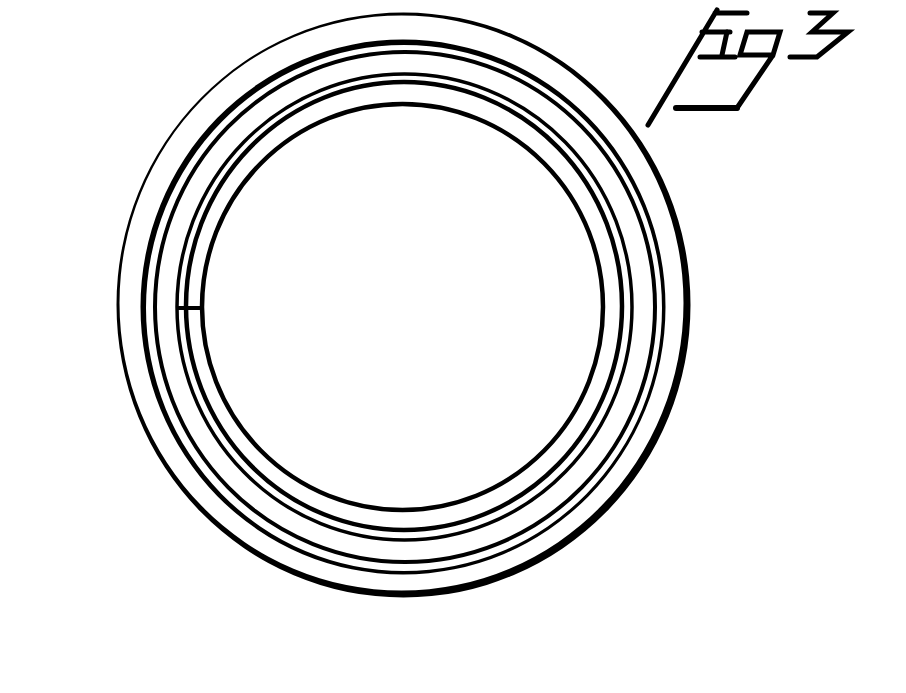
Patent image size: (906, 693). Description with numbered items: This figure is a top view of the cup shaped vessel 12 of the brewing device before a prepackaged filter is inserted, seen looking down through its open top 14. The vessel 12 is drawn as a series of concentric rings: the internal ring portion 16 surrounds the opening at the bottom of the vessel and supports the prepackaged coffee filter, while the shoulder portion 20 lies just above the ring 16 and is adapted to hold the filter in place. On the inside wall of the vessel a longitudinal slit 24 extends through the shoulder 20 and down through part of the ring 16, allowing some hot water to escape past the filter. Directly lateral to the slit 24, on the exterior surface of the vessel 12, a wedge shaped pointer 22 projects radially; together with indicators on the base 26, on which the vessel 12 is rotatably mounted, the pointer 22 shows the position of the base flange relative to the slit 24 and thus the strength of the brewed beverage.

The cup shaped vessel 12 is at (648, 152).
The open top 14 is at (360, 365).
The internal ring portion 16 is at (590, 205).
The shoulder portion 20 is at (627, 261).
The wedge shaped pointer 22 is at (138, 297).
The longitudinal slit 24 is at (186, 278).
The base 26 is at (670, 360).